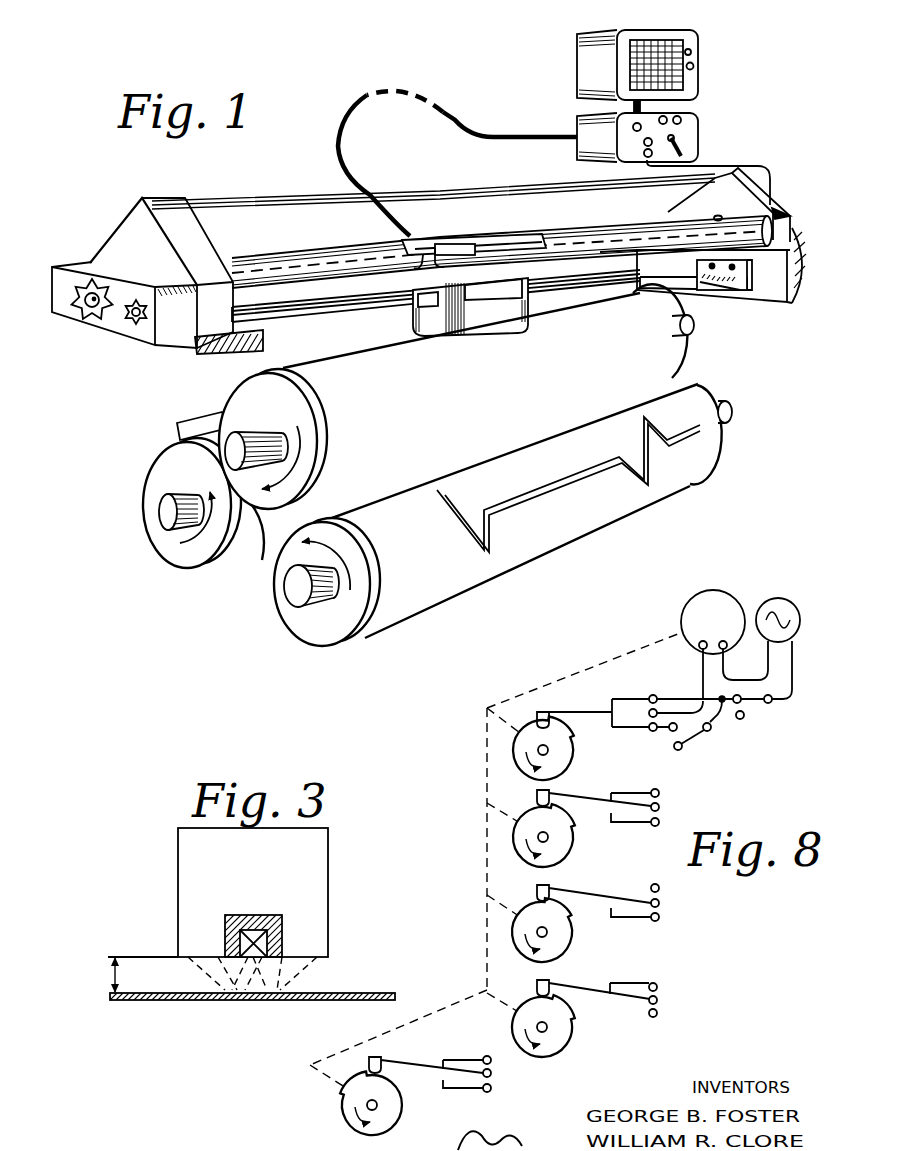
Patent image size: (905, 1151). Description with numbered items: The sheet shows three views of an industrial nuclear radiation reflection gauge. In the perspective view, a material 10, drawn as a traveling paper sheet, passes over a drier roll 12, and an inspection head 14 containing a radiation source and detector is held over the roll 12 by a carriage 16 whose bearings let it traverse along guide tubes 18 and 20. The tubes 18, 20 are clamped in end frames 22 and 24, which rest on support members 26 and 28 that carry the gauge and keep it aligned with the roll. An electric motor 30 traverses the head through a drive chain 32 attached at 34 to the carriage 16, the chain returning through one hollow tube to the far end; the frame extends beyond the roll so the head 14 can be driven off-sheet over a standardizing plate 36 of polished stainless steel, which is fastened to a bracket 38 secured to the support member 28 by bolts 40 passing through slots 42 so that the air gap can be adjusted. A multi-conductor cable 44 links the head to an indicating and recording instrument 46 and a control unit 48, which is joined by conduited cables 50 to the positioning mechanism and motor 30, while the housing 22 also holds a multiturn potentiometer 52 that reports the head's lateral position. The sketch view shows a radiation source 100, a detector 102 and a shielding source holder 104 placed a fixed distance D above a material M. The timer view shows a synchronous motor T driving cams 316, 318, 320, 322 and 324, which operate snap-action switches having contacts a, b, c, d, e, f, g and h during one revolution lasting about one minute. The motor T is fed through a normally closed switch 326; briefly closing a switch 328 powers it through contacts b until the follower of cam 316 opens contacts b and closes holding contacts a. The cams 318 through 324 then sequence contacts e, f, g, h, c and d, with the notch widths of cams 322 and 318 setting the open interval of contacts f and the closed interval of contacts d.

In FIG. 1, the material 10 is at (318, 357).
In FIG. 1, the drier roll 12 is at (226, 391).
In FIG. 1, the inspection head 14 is at (410, 323).
In FIG. 1, the carriage 16 is at (489, 233).
In FIG. 1, the guide tube 18 is at (299, 258).
In FIG. 1, the guide tube 20 is at (347, 302).
In FIG. 1, the end frame 22 is at (126, 213).
In FIG. 1, the end frame 24 is at (775, 196).
In FIG. 1, the support member 26 is at (193, 348).
In FIG. 1, the support member 28 is at (771, 304).
In FIG. 1, the electric motor 30 is at (82, 311).
In FIG. 1, the drive chain 32 is at (419, 260).
In FIG. 1, the attachment point 34 is at (438, 257).
In FIG. 1, the standardizing plate 36 is at (640, 282).
In FIG. 1, the bracket 38 is at (696, 266).
In FIG. 1, the bolts 40 is at (753, 272).
In FIG. 1, the slots 42 is at (742, 286).
In FIG. 1, the multi-conductor cable 44 is at (363, 172).
In FIG. 1, the indicating and continuous recording instrument 46 is at (703, 62).
In FIG. 1, the control unit 48 is at (701, 131).
In FIG. 1, the conduited cables 50 is at (739, 161).
In FIG. 1, the helical wound multiturn potentiometer 52 is at (132, 325).
In FIG. 3, the radiation source 100 is at (228, 932).
In FIG. 3, the detector 102 is at (333, 870).
In FIG. 3, the source holder 104 is at (274, 914).
In FIG. 3, the distance D is at (112, 975).
In FIG. 3, the material M is at (150, 1003).
In FIG. 8, the synchronous motor T is at (713, 622).
In FIG. 8, the cam 316 is at (510, 752).
In FIG. 8, the cam 318 is at (571, 857).
In FIG. 8, the cam 320 is at (569, 944).
In FIG. 8, the cam 322 is at (567, 1036).
In FIG. 8, the cam 324 is at (401, 1124).
In FIG. 8, the normally closed switch 326 is at (748, 702).
In FIG. 8, the switch 328 is at (692, 738).
In FIG. 8, the contacts a is at (622, 696).
In FIG. 8, the contacts b is at (628, 731).
In FIG. 8, the contacts c is at (622, 791).
In FIG. 8, the contacts d is at (626, 828).
In FIG. 8, the contacts e is at (617, 923).
In FIG. 8, the contacts f is at (626, 980).
In FIG. 8, the contacts g is at (463, 1050).
In FIG. 8, the contacts h is at (456, 1094).